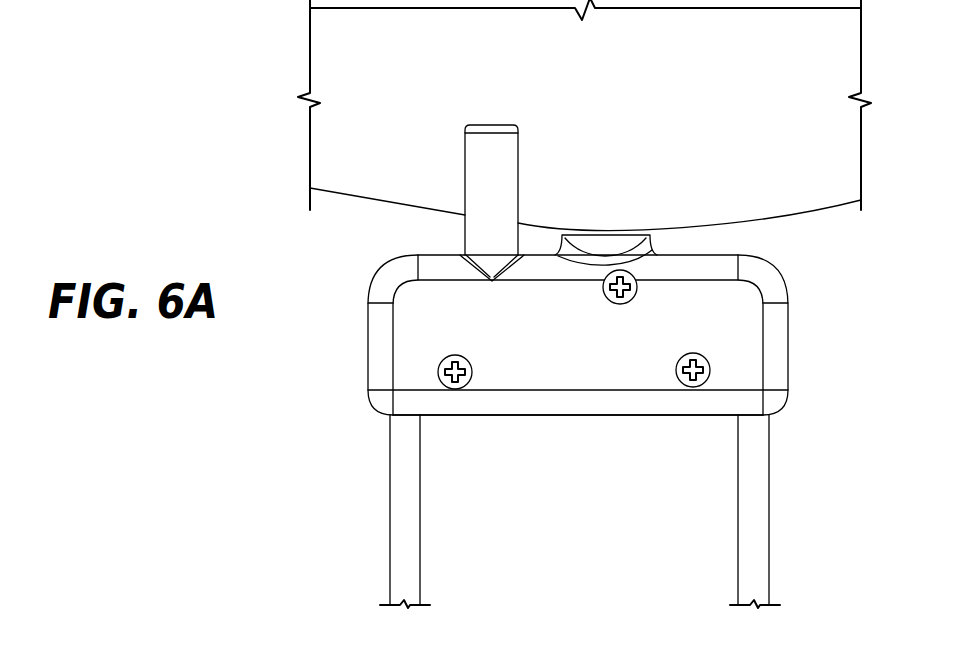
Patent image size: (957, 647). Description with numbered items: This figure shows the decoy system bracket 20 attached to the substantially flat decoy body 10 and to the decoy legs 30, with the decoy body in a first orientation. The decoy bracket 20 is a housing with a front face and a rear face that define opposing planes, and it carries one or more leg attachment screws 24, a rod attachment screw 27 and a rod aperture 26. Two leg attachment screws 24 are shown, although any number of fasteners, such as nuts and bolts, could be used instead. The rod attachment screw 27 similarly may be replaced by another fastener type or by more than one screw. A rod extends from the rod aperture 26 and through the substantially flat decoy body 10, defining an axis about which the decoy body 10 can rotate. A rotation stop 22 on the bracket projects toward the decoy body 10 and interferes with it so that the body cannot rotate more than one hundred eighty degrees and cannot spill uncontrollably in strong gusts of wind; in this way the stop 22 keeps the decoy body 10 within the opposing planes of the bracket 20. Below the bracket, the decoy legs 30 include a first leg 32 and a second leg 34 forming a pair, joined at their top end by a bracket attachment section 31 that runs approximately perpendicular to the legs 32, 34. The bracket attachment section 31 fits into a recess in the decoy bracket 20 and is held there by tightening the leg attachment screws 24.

The substantially flat decoy body 10 is at (336, 201).
The decoy system bracket 20 is at (366, 360).
The rotation stop 22 is at (465, 227).
The leg attachment screws 24 is at (466, 382).
The rod aperture 26 is at (640, 233).
The rod attachment screw 27 is at (632, 298).
The decoy legs 30 is at (771, 553).
The bracket attachment section 31 is at (562, 416).
The first leg 32 is at (390, 517).
The second leg 34 is at (769, 501).